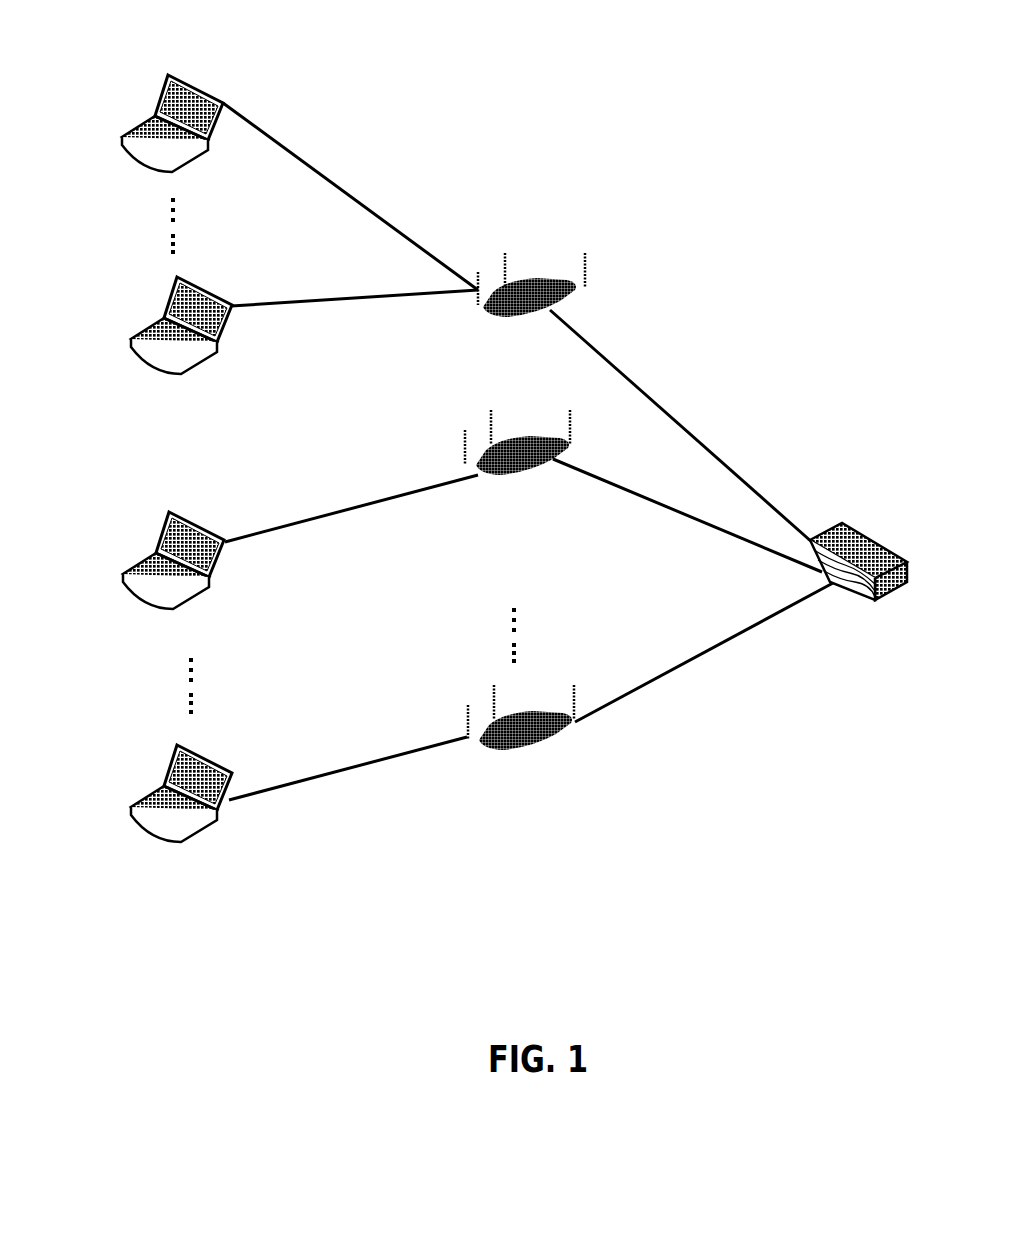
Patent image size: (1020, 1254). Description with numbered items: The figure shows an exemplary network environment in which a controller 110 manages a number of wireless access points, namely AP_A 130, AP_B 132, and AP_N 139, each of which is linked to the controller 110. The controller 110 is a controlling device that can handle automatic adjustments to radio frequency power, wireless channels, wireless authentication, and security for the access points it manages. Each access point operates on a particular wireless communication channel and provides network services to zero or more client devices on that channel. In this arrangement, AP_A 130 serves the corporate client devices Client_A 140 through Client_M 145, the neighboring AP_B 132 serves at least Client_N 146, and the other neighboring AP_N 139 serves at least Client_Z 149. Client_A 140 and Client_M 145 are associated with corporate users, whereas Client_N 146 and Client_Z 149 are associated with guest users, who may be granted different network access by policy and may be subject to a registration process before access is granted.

The Client_A 140 is at (110, 121).
The Client_M 145 is at (117, 425).
The Client_N 146 is at (119, 561).
The Client_Z 149 is at (117, 886).
The AP_A 130 is at (538, 384).
The AP_B 132 is at (529, 543).
The AP_N 139 is at (530, 816).
The controller 110 is at (871, 660).